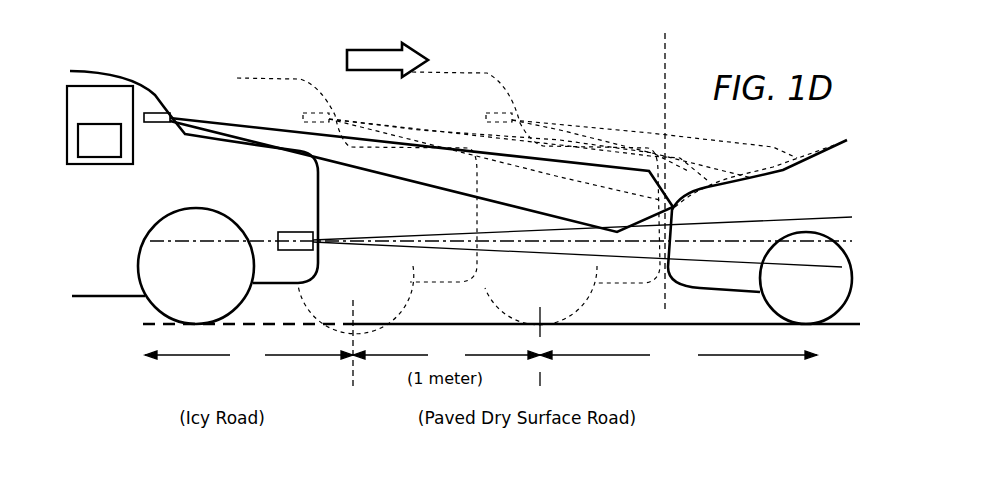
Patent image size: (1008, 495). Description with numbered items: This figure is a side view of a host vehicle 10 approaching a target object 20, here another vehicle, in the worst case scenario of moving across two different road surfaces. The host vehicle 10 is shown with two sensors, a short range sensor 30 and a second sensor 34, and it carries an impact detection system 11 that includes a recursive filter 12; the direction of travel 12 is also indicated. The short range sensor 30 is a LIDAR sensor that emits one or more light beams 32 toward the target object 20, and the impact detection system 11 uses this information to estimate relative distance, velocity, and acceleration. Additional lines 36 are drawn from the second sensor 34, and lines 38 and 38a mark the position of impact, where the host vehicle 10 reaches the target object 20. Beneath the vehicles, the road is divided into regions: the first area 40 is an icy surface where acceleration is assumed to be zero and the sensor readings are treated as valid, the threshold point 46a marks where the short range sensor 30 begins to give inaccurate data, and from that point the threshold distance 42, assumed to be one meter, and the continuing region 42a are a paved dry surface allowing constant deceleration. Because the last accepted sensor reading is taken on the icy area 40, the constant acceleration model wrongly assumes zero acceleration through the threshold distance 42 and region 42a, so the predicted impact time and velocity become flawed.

The host vehicle 10 is at (120, 202).
The impact detection system 11 is at (88, 115).
The recursive filter 12 is at (88, 153).
The target object 20 is at (820, 194).
The short range sensor 30 is at (155, 112).
The light beams 32 is at (240, 137).
The sensor 34 is at (290, 232).
The sensor lines 36 is at (420, 237).
The impact point 38 is at (665, 50).
The reference position marker 38a is at (541, 377).
The first area 40 is at (249, 355).
The threshold distance 42 is at (446, 355).
The paved dry surface 42a is at (678, 355).
The threshold point 46a is at (353, 378).